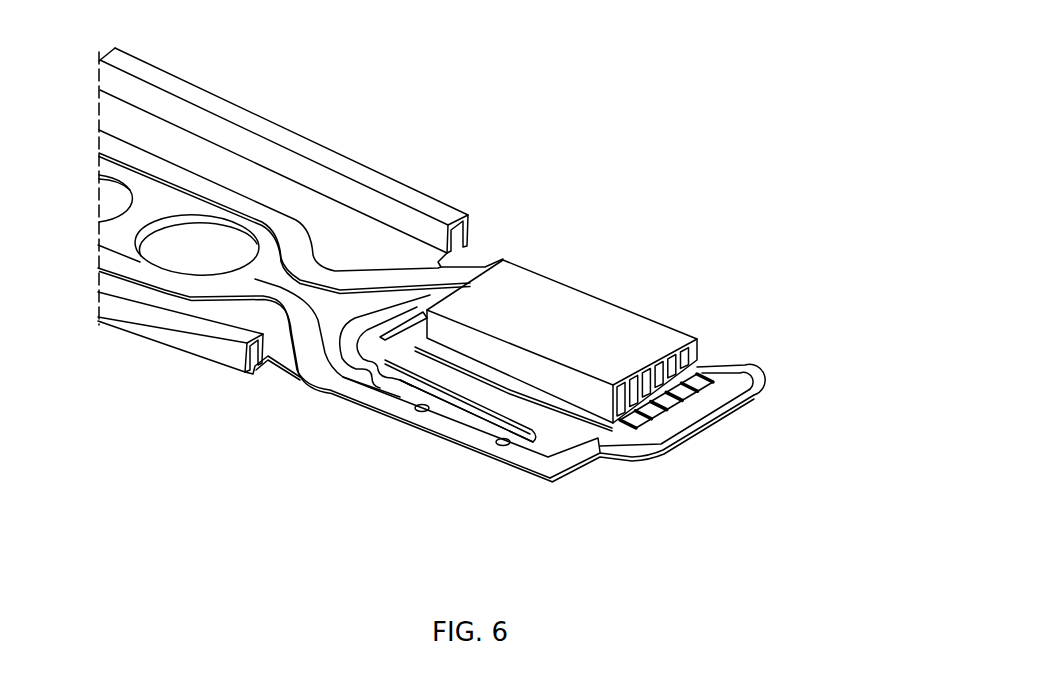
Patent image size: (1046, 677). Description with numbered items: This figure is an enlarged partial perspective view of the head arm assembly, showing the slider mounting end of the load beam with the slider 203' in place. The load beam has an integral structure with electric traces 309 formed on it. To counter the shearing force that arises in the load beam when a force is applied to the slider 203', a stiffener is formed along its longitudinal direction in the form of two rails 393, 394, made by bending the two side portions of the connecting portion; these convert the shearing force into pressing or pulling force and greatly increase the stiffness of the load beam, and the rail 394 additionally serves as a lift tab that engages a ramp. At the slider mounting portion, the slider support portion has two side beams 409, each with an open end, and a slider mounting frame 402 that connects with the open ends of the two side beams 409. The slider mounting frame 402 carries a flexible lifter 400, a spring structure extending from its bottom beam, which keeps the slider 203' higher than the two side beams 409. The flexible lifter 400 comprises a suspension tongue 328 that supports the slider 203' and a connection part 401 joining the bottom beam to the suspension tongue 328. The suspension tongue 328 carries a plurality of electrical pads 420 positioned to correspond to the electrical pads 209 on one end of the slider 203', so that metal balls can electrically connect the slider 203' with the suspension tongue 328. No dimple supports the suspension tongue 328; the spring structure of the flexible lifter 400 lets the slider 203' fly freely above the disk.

The rail 394 is at (300, 154).
The rail 393 is at (178, 328).
The slider 203' is at (562, 288).
The electrical pads 209 is at (700, 355).
The electrical pads 420 is at (657, 423).
The flexible lifter 400 is at (577, 537).
The suspension tongue 328 is at (576, 415).
The slider mounting frame 402 is at (378, 377).
The connection part 401 is at (410, 345).
The side beams 409 is at (408, 400).
The electric traces 309 is at (377, 407).